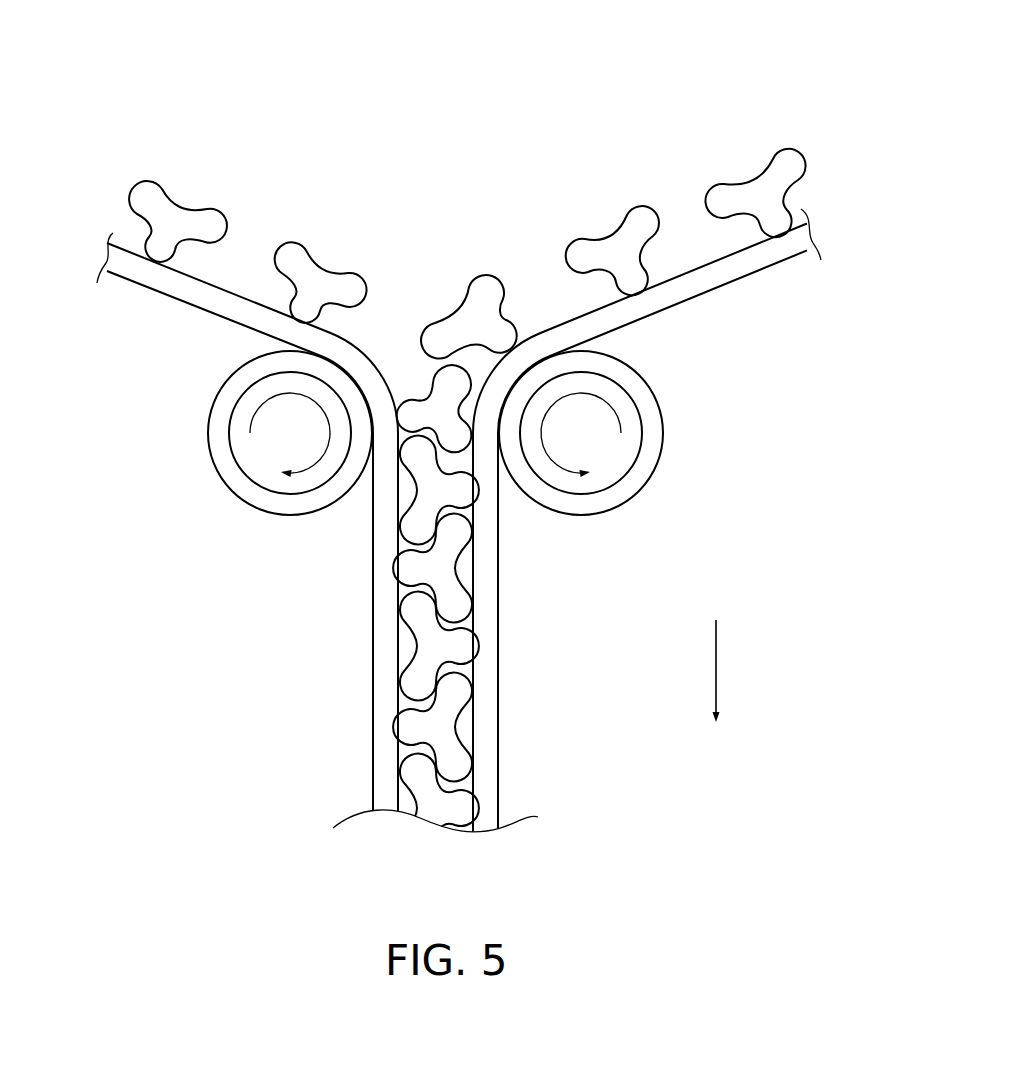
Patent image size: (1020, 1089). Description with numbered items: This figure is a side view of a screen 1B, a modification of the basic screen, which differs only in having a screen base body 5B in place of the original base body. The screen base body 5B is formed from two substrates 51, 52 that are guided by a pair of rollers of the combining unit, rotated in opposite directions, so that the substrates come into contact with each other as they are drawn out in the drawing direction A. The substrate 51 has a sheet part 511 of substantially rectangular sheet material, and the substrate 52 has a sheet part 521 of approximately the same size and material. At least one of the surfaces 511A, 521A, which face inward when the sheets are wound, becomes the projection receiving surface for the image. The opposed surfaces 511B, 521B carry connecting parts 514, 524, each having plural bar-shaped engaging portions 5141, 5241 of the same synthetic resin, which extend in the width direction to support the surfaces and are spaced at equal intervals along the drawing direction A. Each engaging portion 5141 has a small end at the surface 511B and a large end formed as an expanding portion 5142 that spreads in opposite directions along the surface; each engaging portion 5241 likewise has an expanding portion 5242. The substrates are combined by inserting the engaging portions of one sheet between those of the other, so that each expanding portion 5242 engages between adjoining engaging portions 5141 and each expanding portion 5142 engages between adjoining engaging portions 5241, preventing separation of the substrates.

The screen 1B is at (752, 88).
The substrate 51 is at (135, 150).
The sheet part 511 is at (192, 295).
The surface 511A is at (137, 278).
The surface 511B is at (238, 288).
The connecting part 514 is at (323, 135).
The engaging portion 5141 is at (282, 242).
The expanding portion 5142 is at (193, 218).
The substrate 52 is at (782, 127).
The sheet part 521 is at (712, 280).
The surface 521A is at (757, 277).
The surface 521B is at (620, 297).
The connecting part 524 is at (595, 135).
The engaging portion 5241 is at (487, 277).
The expanding portion 5242 is at (497, 288).
The screen base body 5B is at (605, 605).
The drawing direction A is at (722, 672).